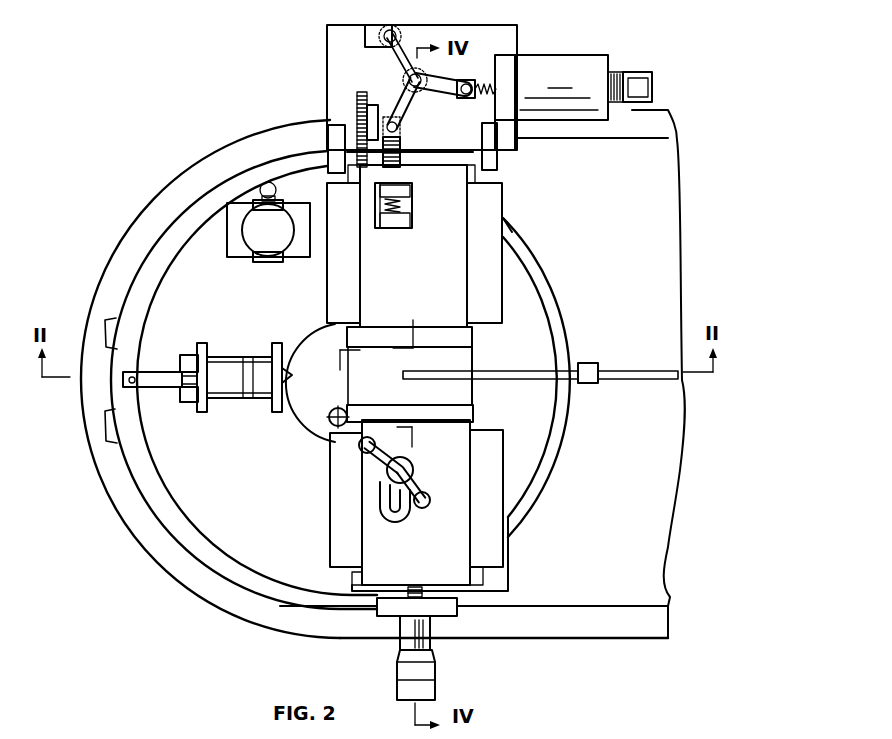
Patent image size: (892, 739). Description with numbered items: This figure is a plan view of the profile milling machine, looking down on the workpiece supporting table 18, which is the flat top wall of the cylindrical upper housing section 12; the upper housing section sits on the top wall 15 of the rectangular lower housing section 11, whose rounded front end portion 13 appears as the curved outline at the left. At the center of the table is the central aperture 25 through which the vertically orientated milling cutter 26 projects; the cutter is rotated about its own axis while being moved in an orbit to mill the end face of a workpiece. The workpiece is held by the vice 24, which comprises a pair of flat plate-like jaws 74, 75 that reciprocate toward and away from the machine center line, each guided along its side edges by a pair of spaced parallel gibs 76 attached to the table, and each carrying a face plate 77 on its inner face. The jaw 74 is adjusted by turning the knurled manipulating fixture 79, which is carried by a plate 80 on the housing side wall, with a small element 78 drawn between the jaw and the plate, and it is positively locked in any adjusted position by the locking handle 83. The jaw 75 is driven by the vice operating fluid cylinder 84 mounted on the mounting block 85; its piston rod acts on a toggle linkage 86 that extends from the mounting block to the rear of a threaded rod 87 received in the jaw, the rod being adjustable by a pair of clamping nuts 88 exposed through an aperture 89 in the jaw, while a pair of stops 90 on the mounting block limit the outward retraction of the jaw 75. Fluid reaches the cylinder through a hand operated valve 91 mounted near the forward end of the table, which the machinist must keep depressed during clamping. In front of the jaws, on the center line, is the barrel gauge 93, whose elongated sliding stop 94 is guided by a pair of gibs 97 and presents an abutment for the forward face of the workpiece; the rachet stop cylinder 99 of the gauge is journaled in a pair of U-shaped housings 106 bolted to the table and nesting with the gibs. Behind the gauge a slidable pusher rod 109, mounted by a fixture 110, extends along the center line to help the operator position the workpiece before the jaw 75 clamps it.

The lower housing section 11 is at (226, 153).
The upper housing section 12 is at (197, 550).
The rounded front end portion 13 is at (110, 475).
The top wall 15 is at (504, 672).
The workpiece supporting table 18 is at (177, 508).
The vice 24 is at (600, 240).
The central aperture 25 is at (300, 348).
The milling cutter 26 is at (333, 426).
The jaw 74 is at (463, 537).
The jaw 75 is at (448, 286).
The gibs 76 is at (338, 287).
The face plate 77 is at (470, 339).
The fastening bolt 78 is at (422, 597).
The manipulating fixture 79 is at (428, 673).
The plate 80 is at (403, 608).
The locking handle 83 is at (390, 463).
The vice operating fluid cylinder 84 is at (577, 63).
The mounting block 85 is at (507, 34).
The toggle linkage 86 is at (433, 72).
The threaded rod 87 is at (400, 153).
The clamping nuts 88 is at (403, 189).
The aperture 89 is at (400, 207).
The stops 90 is at (335, 143).
The hand operated valve 91 is at (263, 243).
The barrel gauge 93 is at (213, 343).
The sliding stop 94 is at (162, 377).
The gibs 97 is at (185, 362).
The rachet stop cylinder 99 is at (255, 367).
The U-shaped housings 106 is at (281, 405).
The pusher rod 109 is at (520, 378).
The fixture 110 is at (586, 372).